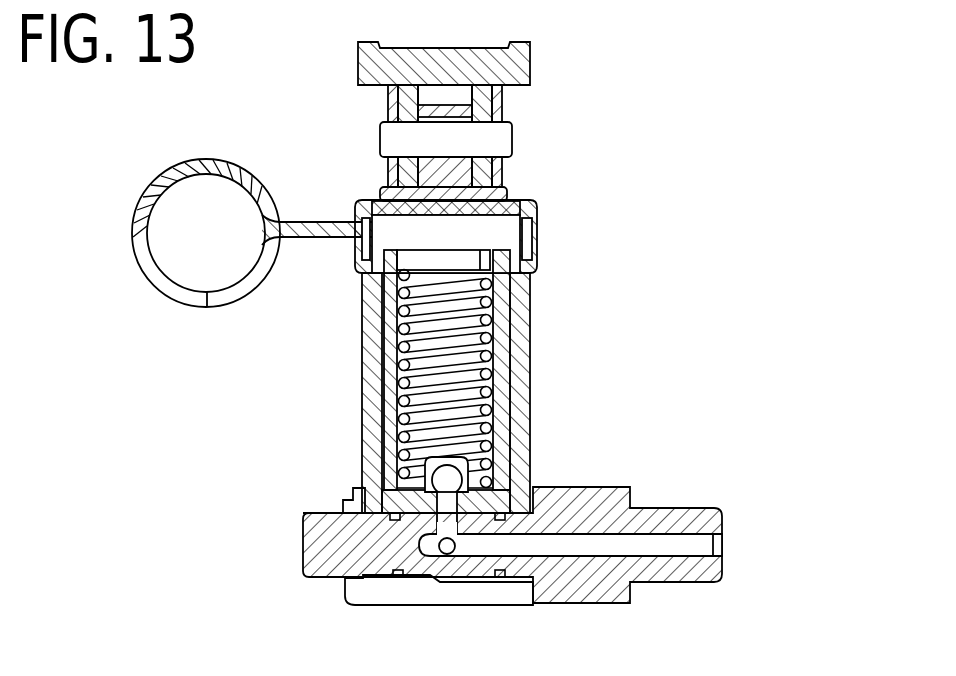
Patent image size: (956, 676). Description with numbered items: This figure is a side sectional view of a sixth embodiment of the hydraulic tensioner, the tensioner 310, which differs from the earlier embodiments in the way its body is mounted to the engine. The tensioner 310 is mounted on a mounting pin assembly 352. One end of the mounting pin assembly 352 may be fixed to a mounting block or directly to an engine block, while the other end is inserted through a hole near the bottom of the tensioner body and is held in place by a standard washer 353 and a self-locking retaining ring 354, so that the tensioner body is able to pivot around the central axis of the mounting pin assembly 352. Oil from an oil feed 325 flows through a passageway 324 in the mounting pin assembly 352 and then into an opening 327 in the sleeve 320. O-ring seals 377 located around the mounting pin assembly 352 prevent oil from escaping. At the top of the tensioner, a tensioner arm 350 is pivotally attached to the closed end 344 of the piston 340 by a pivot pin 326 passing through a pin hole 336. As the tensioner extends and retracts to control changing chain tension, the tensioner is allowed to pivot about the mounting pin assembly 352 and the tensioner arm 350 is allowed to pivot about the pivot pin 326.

The tensioner 310 is at (536, 324).
The sleeve 320 is at (365, 380).
The passageway 324 is at (690, 546).
The oil feed 325 is at (726, 542).
The pivot pin 326 is at (513, 141).
The opening 327 is at (453, 507).
The pin hole 336 is at (388, 112).
The piston 340 is at (515, 355).
The closed end 344 is at (452, 188).
The tensioner arm 350 is at (525, 62).
The mounting pin assembly 352 is at (645, 508).
The washer 353 is at (356, 488).
The retaining ring 354 is at (345, 514).
The O-ring seals 377 is at (398, 578).